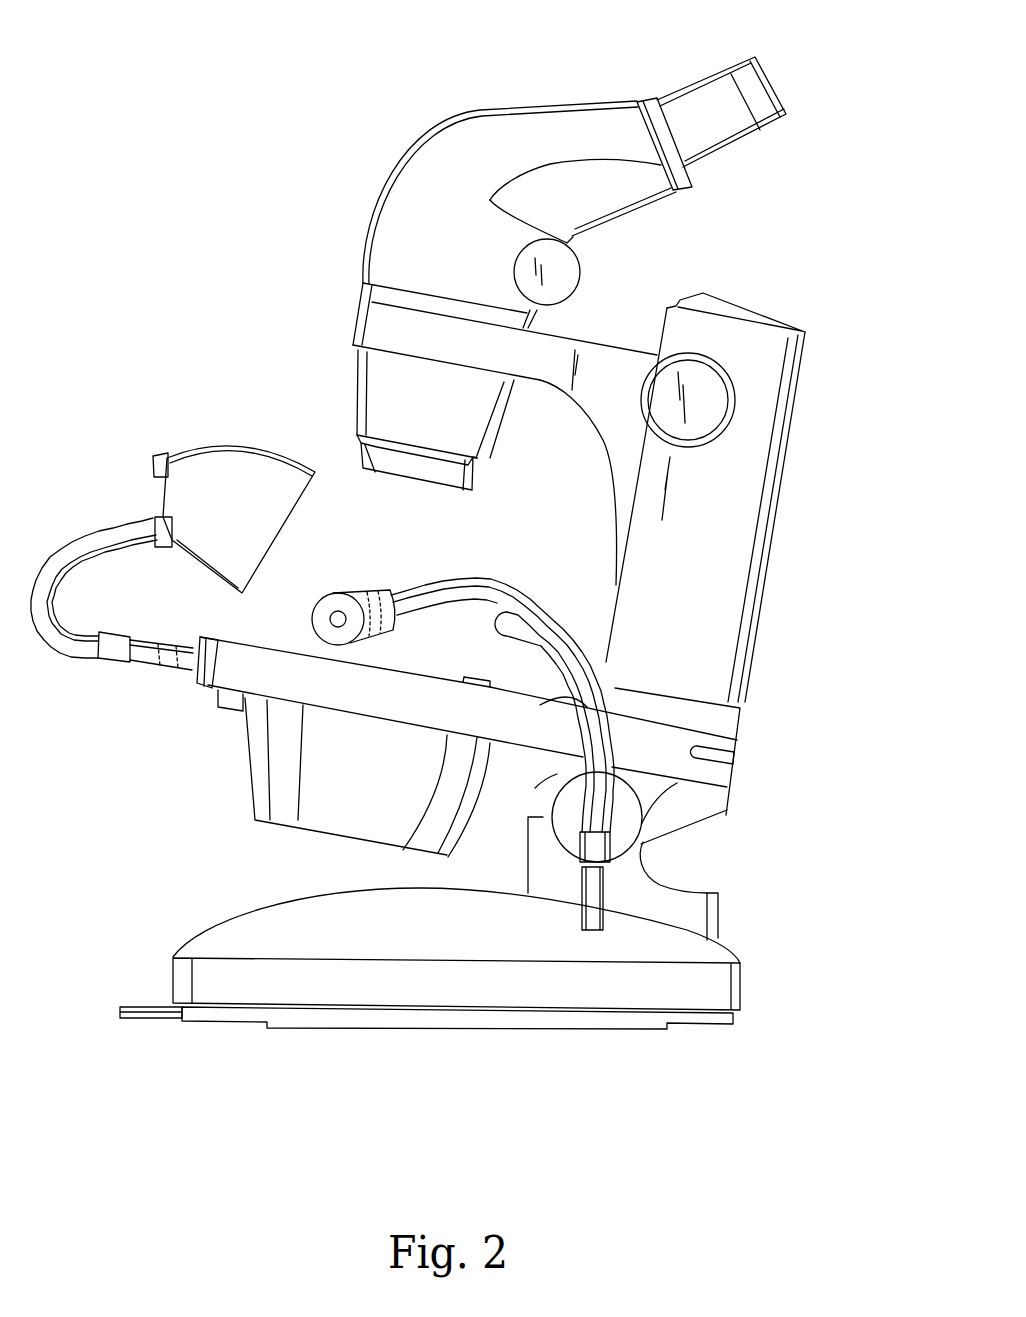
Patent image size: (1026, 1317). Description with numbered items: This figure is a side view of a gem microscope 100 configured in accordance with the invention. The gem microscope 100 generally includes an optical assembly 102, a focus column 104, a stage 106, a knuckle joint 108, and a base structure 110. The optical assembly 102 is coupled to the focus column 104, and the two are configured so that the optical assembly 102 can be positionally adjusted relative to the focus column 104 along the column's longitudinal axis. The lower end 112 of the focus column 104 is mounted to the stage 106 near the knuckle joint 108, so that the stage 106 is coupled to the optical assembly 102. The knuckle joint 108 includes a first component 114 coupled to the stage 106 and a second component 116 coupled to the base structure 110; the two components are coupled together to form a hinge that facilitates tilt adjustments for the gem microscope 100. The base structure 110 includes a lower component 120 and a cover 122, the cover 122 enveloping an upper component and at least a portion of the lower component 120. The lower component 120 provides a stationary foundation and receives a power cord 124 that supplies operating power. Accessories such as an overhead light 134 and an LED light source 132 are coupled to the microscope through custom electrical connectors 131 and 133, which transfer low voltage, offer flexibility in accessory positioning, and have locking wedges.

The gem microscope 100 is at (66, 37).
The optical assembly 102 is at (390, 183).
The focus column 104 is at (778, 497).
The stage 106 is at (205, 690).
The knuckle joint 108 is at (710, 858).
The base structure 110 is at (740, 980).
The lower end 112 is at (743, 700).
The first component 114 is at (730, 803).
The second component 116 is at (720, 917).
The lower component 120 is at (717, 1027).
The cover 122 is at (250, 970).
The power cord 124 is at (148, 1018).
The electrical connector 131 is at (593, 890).
The LED light source 132 is at (455, 584).
The electrical connector 133 is at (143, 650).
The overhead light 134 is at (228, 447).